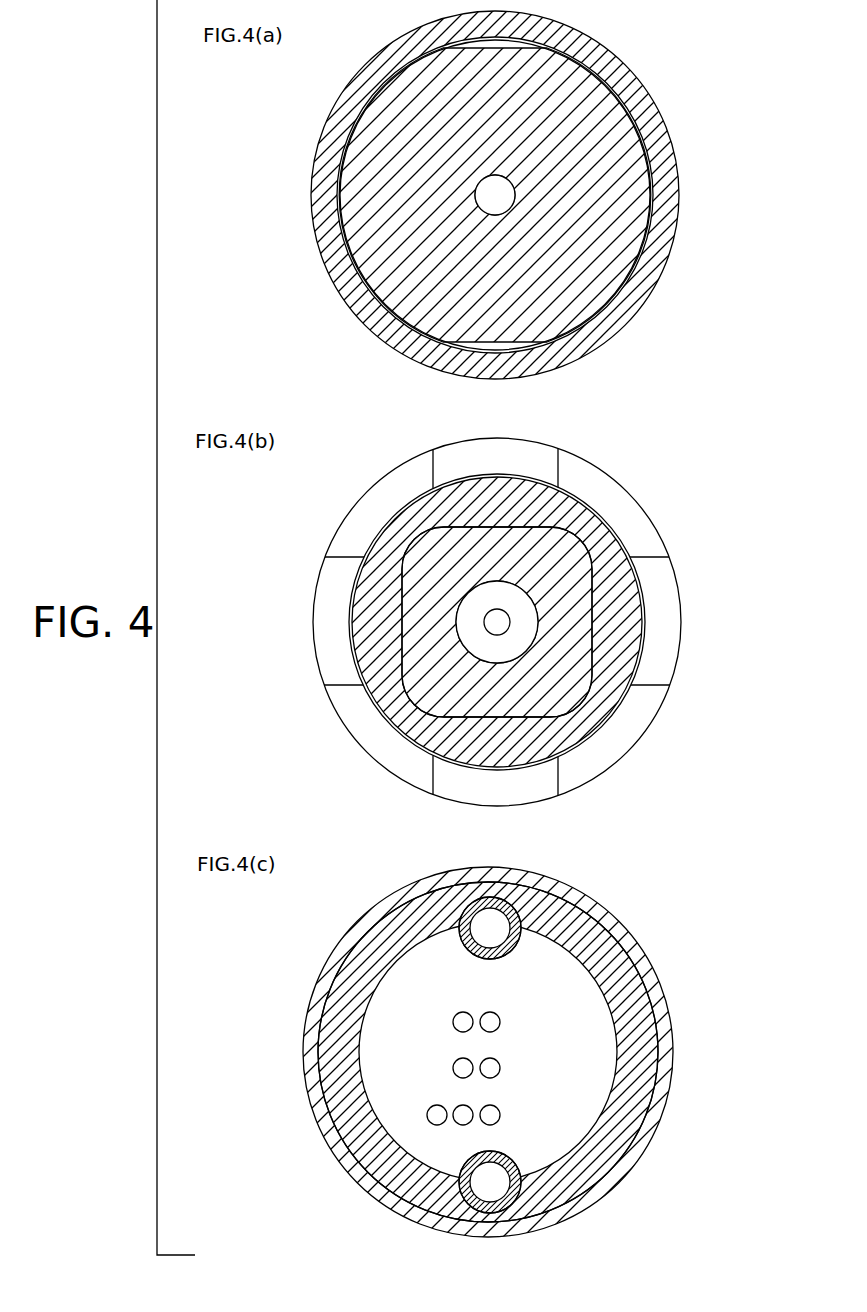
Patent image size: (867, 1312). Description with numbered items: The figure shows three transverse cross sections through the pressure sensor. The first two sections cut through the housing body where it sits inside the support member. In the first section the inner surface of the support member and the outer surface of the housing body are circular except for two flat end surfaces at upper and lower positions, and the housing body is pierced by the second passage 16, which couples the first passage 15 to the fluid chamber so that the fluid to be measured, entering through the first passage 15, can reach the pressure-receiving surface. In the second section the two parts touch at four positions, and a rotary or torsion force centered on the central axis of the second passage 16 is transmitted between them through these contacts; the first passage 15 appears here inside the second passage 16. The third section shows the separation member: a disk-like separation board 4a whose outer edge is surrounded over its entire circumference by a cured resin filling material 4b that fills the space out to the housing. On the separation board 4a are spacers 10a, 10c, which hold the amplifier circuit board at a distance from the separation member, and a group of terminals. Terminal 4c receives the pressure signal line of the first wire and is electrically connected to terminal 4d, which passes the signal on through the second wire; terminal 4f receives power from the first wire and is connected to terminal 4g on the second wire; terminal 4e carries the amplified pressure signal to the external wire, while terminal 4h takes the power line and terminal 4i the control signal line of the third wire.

The second passage 16 is at (490, 194).
The first passage 15 is at (470, 620).
The separation board 4a is at (377, 1035).
The filling material 4b is at (348, 963).
The terminal 4c is at (500, 1068).
The terminal 4d is at (500, 1023).
The terminal 4e is at (500, 1115).
The terminal 4f is at (455, 1065).
The terminal 4g is at (453, 1023).
The terminal 4h is at (455, 1108).
The terminal 4i is at (428, 1117).
The spacer 10a is at (512, 1158).
The spacer 10c is at (466, 948).